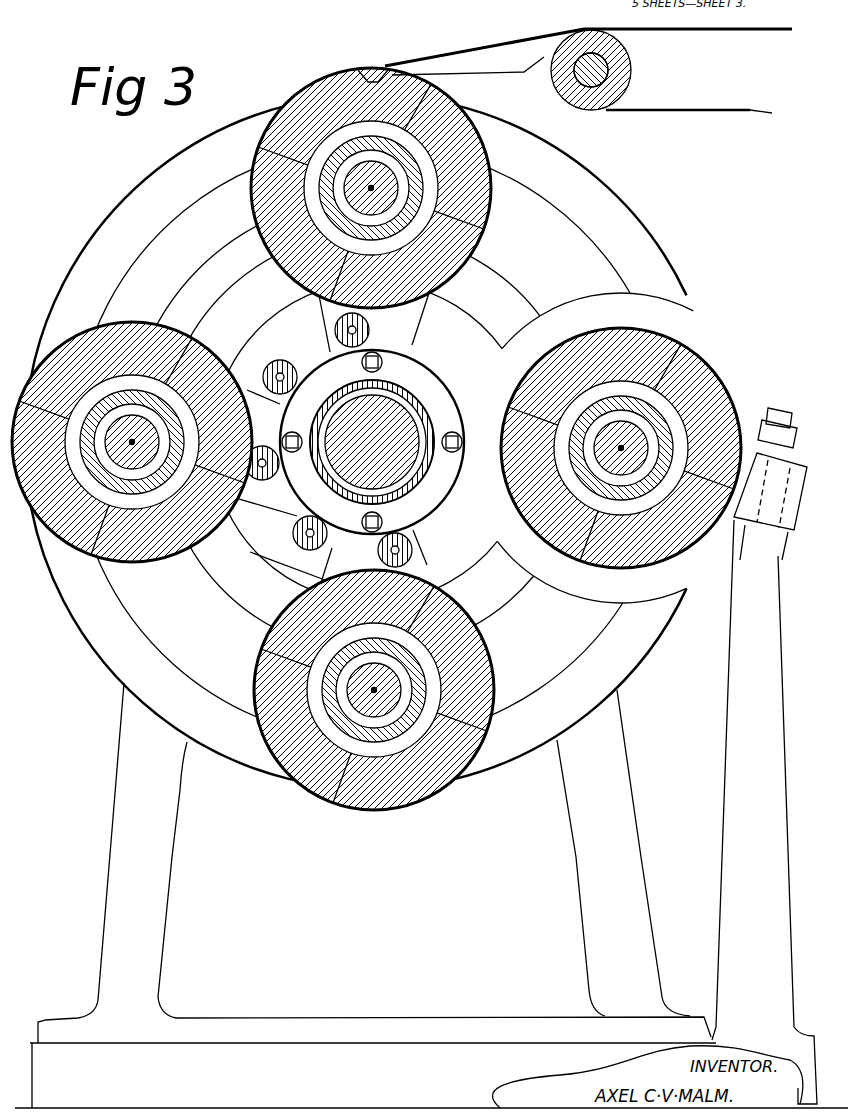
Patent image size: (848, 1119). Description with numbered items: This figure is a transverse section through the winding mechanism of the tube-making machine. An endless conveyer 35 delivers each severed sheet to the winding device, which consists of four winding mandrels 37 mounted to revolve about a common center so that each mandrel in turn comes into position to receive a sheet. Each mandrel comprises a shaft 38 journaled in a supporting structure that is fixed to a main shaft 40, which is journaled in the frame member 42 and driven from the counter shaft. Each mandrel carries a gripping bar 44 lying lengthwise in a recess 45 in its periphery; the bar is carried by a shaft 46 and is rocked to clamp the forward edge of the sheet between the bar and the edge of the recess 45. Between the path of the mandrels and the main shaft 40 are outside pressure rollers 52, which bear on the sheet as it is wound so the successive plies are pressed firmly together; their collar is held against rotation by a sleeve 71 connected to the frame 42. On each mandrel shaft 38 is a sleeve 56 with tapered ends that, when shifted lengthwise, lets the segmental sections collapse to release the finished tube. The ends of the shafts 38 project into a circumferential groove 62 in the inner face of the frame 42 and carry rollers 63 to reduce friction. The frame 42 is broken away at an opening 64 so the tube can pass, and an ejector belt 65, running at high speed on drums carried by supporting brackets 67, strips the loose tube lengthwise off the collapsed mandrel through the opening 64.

The endless conveyer 35 is at (716, 118).
The winding mandrel 37 is at (302, 289).
The mandrel shaft 38 is at (388, 168).
The main shaft 40 is at (356, 490).
The frame member 42 is at (125, 678).
The gripping bar 44 is at (376, 70).
The recess 45 is at (365, 75).
The gripping bar shaft 46 is at (350, 84).
The outside pressure rollers 52 is at (282, 372).
The sleeve 56 is at (257, 240).
The circumferential groove 62 is at (580, 262).
The rollers 63 is at (395, 232).
The opening 64 is at (660, 576).
The ejector belt 65 is at (740, 540).
The supporting brackets 67 is at (786, 538).
The sleeve 71 is at (432, 405).